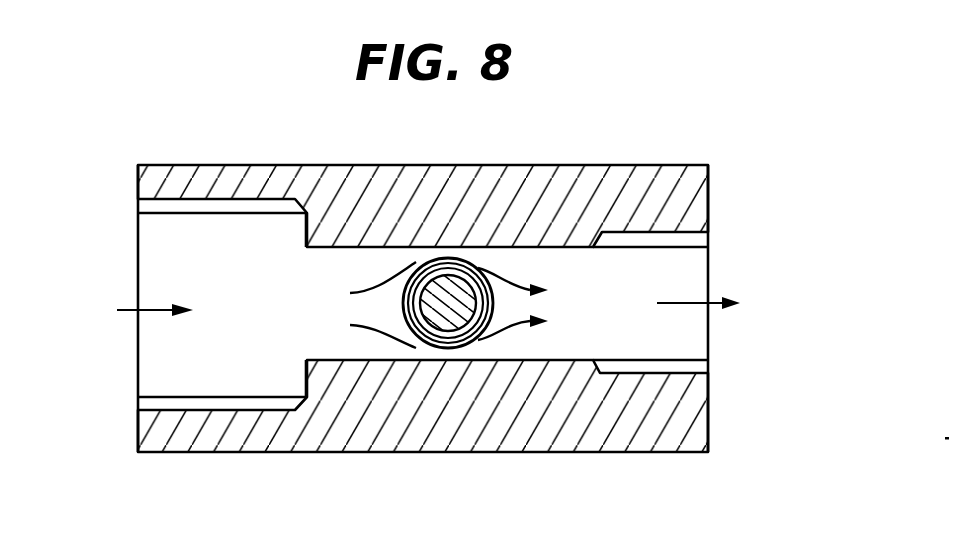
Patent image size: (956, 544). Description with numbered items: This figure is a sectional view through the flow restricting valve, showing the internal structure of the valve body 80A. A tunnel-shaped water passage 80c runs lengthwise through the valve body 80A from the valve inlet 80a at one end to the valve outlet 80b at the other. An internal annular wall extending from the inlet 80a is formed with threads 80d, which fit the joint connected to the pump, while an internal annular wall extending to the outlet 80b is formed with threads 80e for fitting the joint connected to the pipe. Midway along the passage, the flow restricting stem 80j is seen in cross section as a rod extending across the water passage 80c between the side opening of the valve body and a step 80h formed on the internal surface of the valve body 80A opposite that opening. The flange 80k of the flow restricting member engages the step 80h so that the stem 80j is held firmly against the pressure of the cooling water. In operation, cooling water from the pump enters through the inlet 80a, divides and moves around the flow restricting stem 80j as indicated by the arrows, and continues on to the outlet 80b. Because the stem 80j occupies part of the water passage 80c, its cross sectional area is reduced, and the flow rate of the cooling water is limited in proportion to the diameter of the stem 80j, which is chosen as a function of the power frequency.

The valve body 80A is at (532, 452).
The valve inlet 80a is at (162, 292).
The valve outlet 80b is at (673, 343).
The water passage 80c is at (380, 349).
The threads 80d is at (252, 210).
The threads 80e is at (665, 242).
The step 80h is at (480, 270).
The flow restricting stem 80j is at (439, 289).
The flange 80k is at (451, 268).